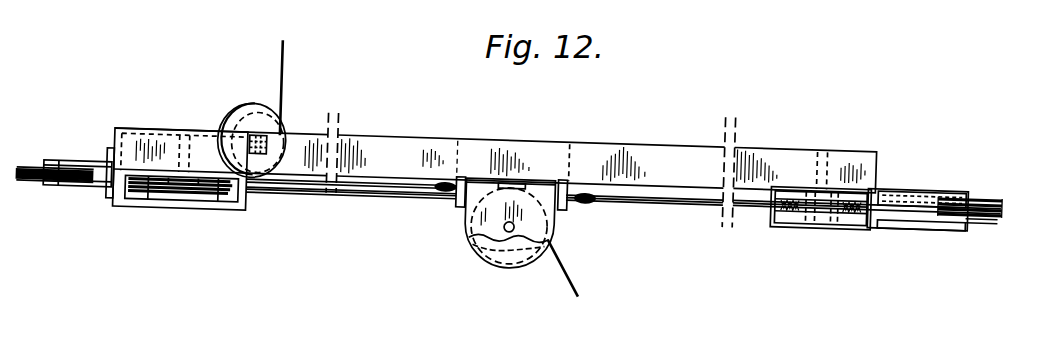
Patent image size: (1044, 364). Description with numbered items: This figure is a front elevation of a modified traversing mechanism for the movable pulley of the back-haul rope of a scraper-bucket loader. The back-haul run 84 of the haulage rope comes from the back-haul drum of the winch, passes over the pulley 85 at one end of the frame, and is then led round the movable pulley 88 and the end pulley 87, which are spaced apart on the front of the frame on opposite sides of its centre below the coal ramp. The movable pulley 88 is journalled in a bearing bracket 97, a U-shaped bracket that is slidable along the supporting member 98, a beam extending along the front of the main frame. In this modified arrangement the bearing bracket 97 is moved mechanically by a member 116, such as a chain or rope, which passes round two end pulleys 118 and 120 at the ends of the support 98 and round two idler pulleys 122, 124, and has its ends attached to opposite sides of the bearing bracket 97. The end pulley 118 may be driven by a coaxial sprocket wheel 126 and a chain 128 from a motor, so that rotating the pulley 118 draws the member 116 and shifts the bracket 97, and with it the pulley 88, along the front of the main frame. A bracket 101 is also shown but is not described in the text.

The back-haul run 84 is at (284, 63).
The pulley 85 is at (247, 106).
The end pulley 87 is at (158, 196).
The movable pulley 88 is at (498, 252).
The bearing bracket 97 is at (458, 180).
The supporting member 98 is at (378, 136).
The bracket 101 is at (470, 223).
The member 116 is at (389, 190).
The end pulley 118 is at (1001, 200).
The end pulley 120 is at (36, 162).
The idler pulley 122 is at (893, 198).
The idler pulley 124 is at (803, 210).
The sprocket wheel 126 is at (977, 221).
The chain 128 is at (997, 226).